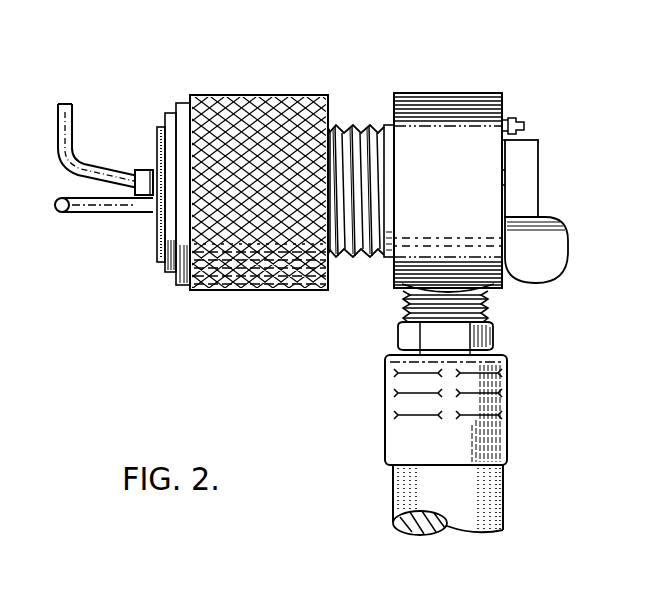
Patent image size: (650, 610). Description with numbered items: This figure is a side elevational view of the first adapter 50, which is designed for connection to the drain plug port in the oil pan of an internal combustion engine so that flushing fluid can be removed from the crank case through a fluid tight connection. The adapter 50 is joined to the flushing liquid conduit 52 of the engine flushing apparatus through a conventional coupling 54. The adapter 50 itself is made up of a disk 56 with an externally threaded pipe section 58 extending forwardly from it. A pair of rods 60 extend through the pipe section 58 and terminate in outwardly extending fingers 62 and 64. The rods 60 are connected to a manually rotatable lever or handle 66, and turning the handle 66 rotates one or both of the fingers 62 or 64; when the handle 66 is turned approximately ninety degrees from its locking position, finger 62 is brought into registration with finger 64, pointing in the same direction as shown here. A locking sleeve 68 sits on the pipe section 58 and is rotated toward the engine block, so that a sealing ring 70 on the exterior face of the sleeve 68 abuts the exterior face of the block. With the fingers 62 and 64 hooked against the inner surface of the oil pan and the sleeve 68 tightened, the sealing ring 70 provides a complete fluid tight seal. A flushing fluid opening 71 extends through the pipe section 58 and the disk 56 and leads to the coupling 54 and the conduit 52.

The first adapter 50 is at (421, 76).
The flushing liquid conduit 52 is at (503, 488).
The coupling 54 is at (507, 397).
The disk 56 is at (457, 94).
The externally threaded pipe section 58 is at (345, 125).
The rods 60 is at (95, 214).
The finger 62 is at (57, 136).
The finger 64 is at (55, 207).
The handle 66 is at (568, 252).
The locking sleeve 68 is at (268, 95).
The sealing ring 70 is at (157, 135).
The flushing fluid opening 71 is at (140, 172).